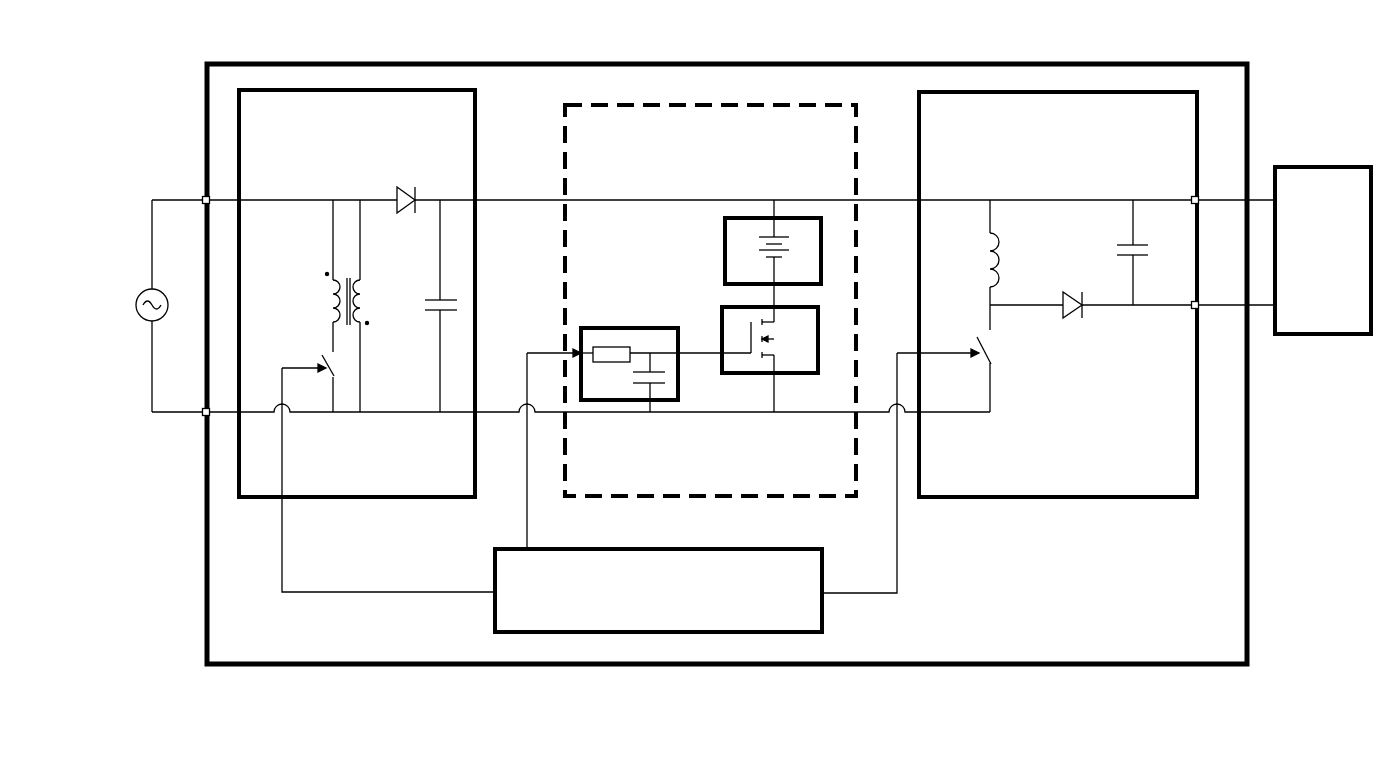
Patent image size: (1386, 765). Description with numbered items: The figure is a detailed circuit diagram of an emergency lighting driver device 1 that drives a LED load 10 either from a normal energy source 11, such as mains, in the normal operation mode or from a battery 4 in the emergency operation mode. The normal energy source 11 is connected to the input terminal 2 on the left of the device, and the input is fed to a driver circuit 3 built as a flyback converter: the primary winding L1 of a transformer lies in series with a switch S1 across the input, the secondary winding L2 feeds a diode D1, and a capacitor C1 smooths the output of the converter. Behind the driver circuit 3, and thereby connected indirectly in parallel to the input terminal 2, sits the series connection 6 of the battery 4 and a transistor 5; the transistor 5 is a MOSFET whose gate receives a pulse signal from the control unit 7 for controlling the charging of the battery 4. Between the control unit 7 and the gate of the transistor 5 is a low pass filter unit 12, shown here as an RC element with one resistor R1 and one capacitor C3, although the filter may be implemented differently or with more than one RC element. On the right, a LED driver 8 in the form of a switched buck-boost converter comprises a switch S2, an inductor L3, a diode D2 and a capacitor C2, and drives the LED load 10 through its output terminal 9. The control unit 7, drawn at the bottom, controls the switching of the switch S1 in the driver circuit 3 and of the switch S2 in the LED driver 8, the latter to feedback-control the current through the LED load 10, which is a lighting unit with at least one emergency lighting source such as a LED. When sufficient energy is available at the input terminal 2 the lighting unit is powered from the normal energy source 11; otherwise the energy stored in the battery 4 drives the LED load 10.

The emergency lighting driver device 1 is at (727, 364).
The input terminal 2 is at (201, 196).
The driver circuit 3 is at (357, 293).
The battery 4 is at (773, 261).
The transistor 5 is at (770, 359).
The series connection 6 is at (826, 408).
The control unit 7 is at (589, 492).
The LED driver 8 is at (1047, 294).
The output terminal 9 is at (1206, 196).
The LED load 10 is at (1323, 250).
The normal energy source 11 is at (137, 292).
The low pass filter unit 12 is at (639, 372).
The primary winding L1 is at (325, 276).
The secondary winding L2 is at (372, 306).
The inductor L3 is at (975, 265).
The capacitor C1 is at (432, 306).
The capacitor C2 is at (1149, 252).
The capacitor C3 is at (655, 386).
The diode D1 is at (406, 187).
The diode D2 is at (1073, 289).
The resistor R1 is at (611, 346).
The switch S1 is at (321, 381).
The switch S2 is at (958, 374).